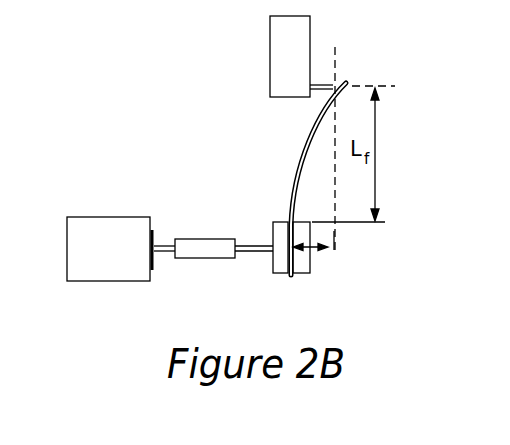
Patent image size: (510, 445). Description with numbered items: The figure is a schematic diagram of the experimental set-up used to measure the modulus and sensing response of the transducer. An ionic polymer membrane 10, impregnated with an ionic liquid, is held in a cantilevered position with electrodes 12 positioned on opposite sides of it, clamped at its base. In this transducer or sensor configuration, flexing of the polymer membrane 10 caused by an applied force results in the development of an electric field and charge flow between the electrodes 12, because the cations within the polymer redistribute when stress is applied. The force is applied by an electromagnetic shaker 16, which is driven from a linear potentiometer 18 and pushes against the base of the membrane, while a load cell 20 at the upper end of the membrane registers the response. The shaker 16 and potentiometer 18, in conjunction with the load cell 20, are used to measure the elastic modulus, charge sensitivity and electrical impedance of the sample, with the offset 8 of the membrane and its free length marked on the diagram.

The fiber offset distance 8 is at (323, 247).
The ionic polymer membrane 10 is at (296, 152).
The electrodes 12 is at (302, 273).
The electromagnetic shaker 16 is at (196, 239).
The linear potentiometer 18 is at (92, 217).
The load cell 20 is at (270, 62).